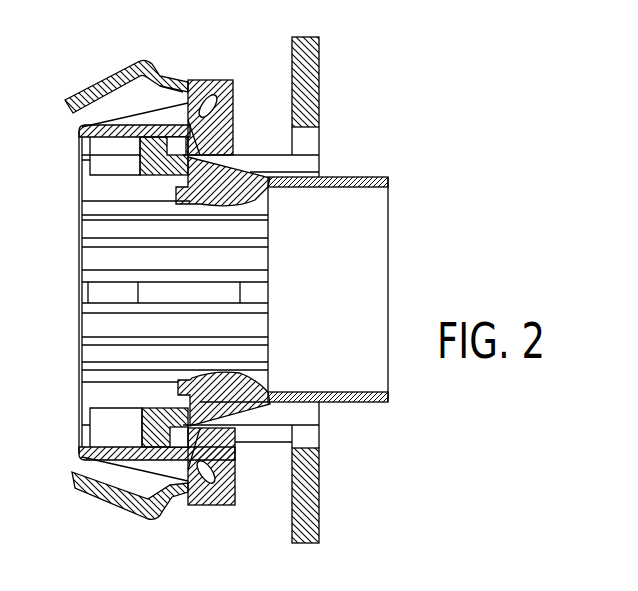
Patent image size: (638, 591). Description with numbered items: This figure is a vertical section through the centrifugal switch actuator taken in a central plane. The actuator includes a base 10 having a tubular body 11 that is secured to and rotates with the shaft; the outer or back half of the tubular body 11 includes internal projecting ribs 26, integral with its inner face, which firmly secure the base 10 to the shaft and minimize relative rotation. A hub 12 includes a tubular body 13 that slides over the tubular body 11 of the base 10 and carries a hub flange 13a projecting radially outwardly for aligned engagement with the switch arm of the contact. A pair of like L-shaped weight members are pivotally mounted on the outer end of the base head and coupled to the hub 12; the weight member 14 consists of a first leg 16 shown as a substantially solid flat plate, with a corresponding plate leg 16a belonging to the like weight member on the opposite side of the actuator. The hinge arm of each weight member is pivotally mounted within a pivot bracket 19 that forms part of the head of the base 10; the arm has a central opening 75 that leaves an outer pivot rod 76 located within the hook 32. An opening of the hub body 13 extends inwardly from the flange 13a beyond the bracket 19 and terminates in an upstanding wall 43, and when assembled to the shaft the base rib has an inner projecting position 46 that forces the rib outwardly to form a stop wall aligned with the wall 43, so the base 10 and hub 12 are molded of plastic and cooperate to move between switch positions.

The base 10 is at (73, 192).
The tubular body 11 is at (330, 190).
The hub 12 is at (362, 408).
The tubular body 13 is at (243, 155).
The hub flange 13a is at (319, 96).
The weight member 14 is at (150, 61).
The first leg 16 is at (99, 82).
The first leg 16a is at (95, 500).
The pivot bracket 19 is at (234, 90).
The internal projecting ribs 26 is at (262, 256).
The hook 32 is at (182, 85).
The upstanding wall 43 is at (90, 154).
The inner projecting position 46 is at (240, 212).
The central opening 75 is at (206, 110).
The outer pivot rod 76 is at (217, 100).